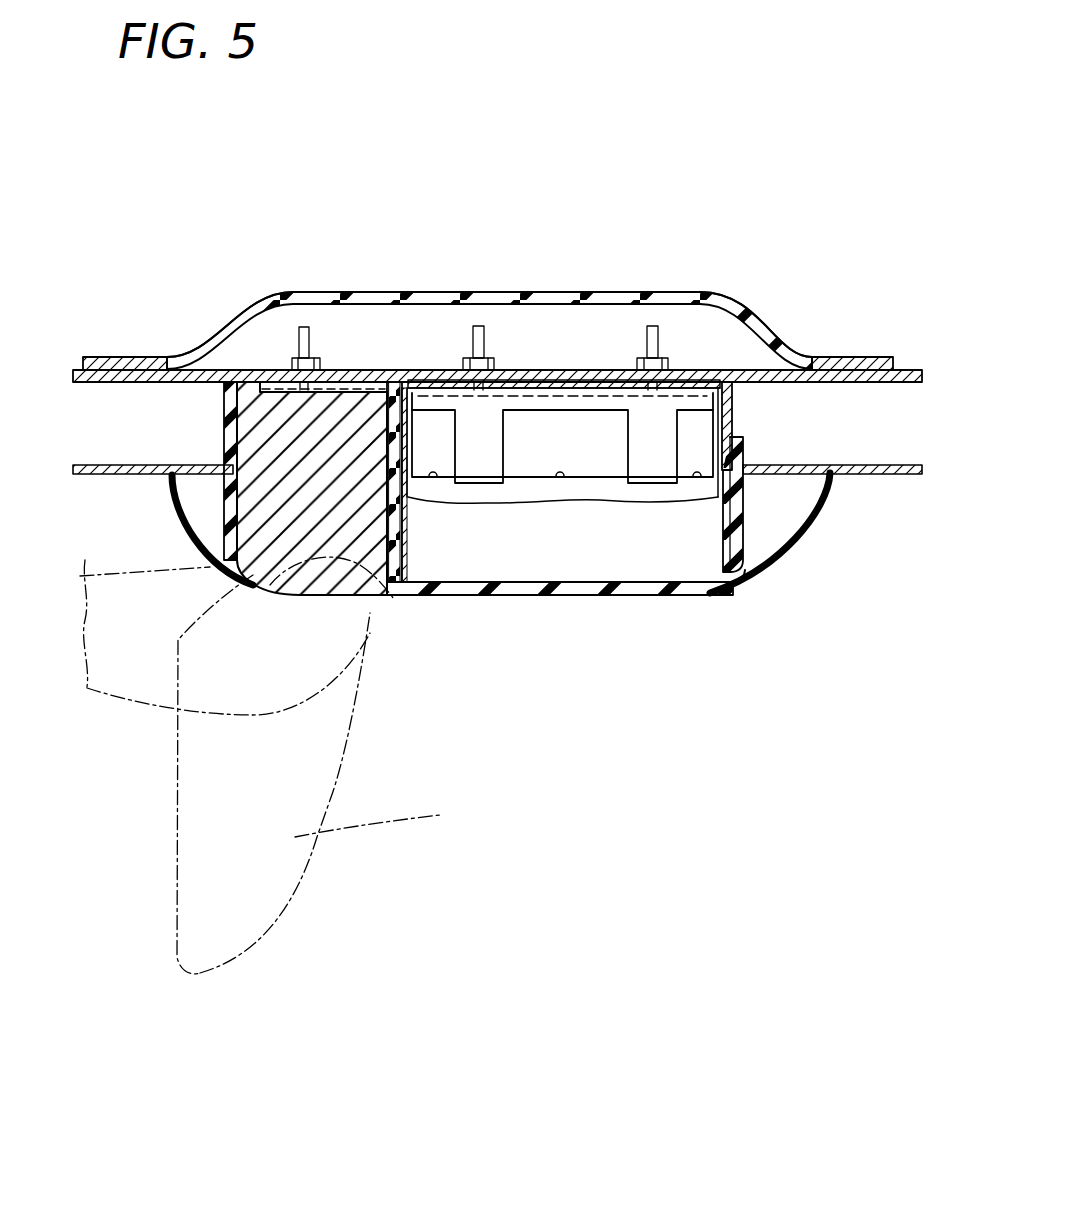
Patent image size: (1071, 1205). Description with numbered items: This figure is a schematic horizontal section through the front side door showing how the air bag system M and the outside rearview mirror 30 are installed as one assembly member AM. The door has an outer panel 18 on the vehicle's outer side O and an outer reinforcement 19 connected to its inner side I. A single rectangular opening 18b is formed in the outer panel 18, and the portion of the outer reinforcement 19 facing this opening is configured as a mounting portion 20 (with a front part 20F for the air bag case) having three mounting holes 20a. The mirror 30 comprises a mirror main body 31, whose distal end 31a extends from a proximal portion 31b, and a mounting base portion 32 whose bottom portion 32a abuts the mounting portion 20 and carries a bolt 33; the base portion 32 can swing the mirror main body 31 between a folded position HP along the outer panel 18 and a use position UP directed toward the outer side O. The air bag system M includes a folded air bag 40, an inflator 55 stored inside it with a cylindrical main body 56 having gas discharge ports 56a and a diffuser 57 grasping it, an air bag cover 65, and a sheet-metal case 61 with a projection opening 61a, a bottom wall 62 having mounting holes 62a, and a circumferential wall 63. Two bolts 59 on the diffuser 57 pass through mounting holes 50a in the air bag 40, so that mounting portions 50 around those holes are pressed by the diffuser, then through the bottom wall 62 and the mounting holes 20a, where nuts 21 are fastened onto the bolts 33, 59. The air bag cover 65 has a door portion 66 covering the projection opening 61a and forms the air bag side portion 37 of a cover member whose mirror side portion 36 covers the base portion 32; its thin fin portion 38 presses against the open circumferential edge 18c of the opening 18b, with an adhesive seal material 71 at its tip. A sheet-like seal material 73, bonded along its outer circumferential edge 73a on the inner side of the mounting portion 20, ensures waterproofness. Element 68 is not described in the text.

The outer panel 18 is at (901, 465).
The opening 18b is at (745, 465).
The open circumferential edge 18c is at (796, 478).
The outer reinforcement 19 is at (874, 382).
The mounting portion 20 is at (340, 362).
The mounting portion (front) 20F is at (590, 355).
The mounting holes 20a is at (326, 293).
The nuts 21 is at (240, 332).
The outside rearview mirror 30 is at (440, 815).
The mirror main body 31 is at (102, 620).
The distal end 31a is at (60, 565).
The proximal portion 31b is at (370, 645).
The mounting base portion 32 is at (250, 433).
The bottom portion 32a is at (267, 378).
The bolt 33 is at (292, 300).
The mirror side portion 36 is at (197, 533).
The air bag side portion 37 is at (530, 597).
The fin portion 38 is at (173, 500).
The air bag 40 is at (482, 497).
The mounting portions 50 is at (423, 380).
The mounting holes 50a is at (637, 392).
The inflator 55 is at (665, 533).
The main body 56 is at (593, 465).
The diffuser 57 is at (652, 463).
The gas discharge ports 56a is at (435, 480).
The bolts 59 is at (480, 325).
The case 61 is at (842, 248).
The projection opening 61a is at (728, 588).
The bottom wall 62 is at (735, 383).
The mounting holes 62a is at (458, 293).
The circumferential wall 63 is at (745, 445).
The air bag cover 65 is at (546, 724).
The door portion 66 is at (597, 590).
The corner portion 68 is at (393, 598).
The seal material 71 is at (165, 476).
The seal material 73 is at (262, 298).
The outer circumferential edge 73a is at (122, 357).
The vehicle's inner side I is at (778, 108).
The vehicle's outer side O is at (778, 827).
The air bag system M is at (658, 677).
The assembly member AM is at (665, 825).
The folded position HP is at (163, 783).
The use position UP is at (165, 958).